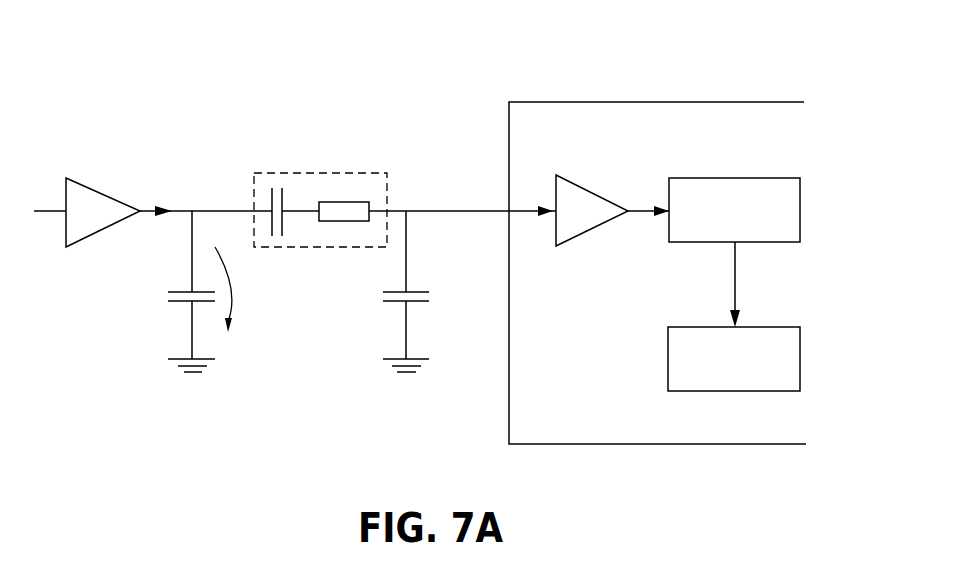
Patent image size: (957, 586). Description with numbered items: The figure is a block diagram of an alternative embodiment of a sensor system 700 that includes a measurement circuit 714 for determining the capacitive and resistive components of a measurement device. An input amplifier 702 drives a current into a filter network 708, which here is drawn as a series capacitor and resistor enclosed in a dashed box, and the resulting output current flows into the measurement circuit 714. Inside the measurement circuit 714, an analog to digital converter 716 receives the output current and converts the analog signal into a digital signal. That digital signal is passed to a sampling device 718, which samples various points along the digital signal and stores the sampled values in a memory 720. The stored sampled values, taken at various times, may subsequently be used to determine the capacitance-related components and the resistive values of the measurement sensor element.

The receiver circuit 700 is at (101, 38).
The input amplifier 702 is at (95, 190).
The RC filter network 708 is at (363, 172).
The measurement circuit 714 is at (765, 102).
The analog to digital converter 716 is at (593, 190).
The sampling device 718 is at (778, 178).
The memory 720 is at (783, 327).